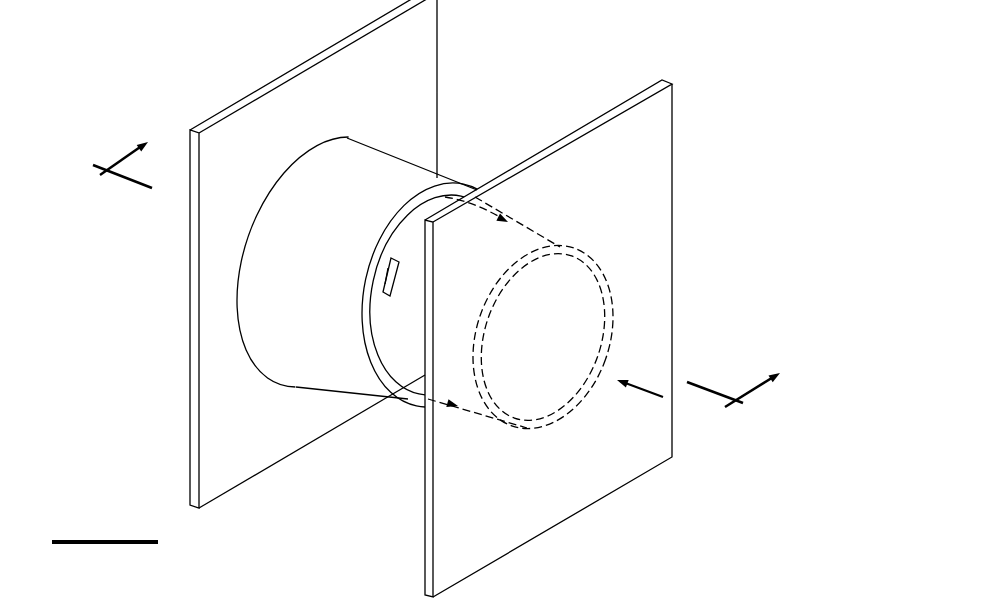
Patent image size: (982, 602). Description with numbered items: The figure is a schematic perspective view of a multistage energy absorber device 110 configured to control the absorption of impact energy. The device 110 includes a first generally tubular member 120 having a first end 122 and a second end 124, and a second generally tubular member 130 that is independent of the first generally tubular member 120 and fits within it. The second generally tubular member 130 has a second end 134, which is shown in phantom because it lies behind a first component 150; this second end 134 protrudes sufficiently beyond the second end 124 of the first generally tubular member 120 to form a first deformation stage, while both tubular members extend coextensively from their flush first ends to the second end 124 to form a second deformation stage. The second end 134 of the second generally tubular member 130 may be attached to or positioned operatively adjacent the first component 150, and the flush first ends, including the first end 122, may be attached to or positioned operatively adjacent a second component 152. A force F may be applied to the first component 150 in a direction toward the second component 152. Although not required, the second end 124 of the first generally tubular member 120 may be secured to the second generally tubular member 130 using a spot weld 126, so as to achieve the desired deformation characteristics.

The multistage energy absorber device 110 is at (489, 75).
The first generally tubular member 120 is at (332, 289).
The first end of the first generally tubular member 122 is at (237, 289).
The second end of the first generally tubular member 124 is at (364, 318).
The spot weld 126 is at (384, 290).
The second generally tubular member 130 is at (457, 414).
The second end of the second generally tubular member 134 is at (600, 262).
The first component 150 is at (423, 563).
The second component 152 is at (190, 386).